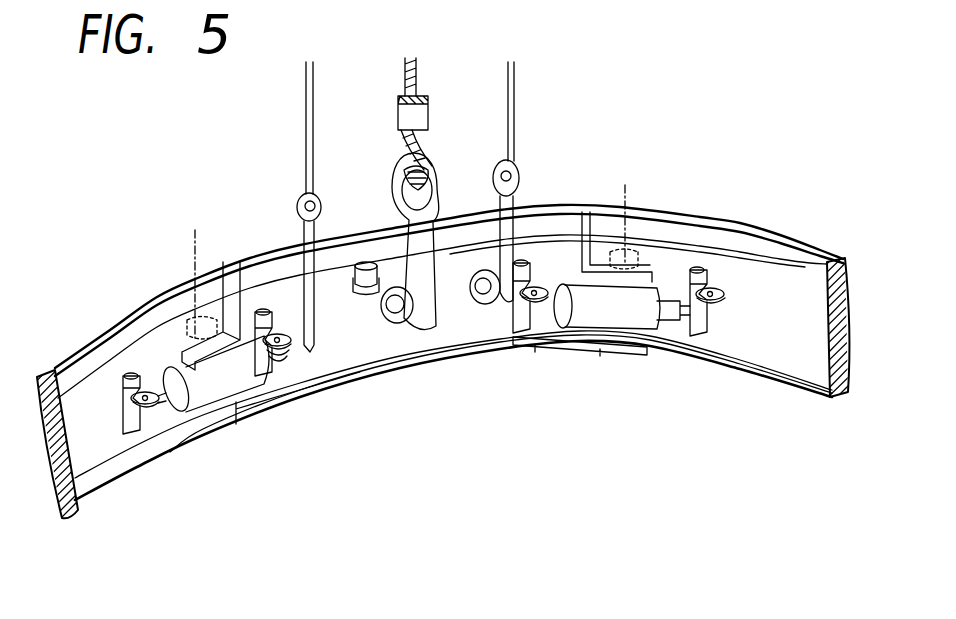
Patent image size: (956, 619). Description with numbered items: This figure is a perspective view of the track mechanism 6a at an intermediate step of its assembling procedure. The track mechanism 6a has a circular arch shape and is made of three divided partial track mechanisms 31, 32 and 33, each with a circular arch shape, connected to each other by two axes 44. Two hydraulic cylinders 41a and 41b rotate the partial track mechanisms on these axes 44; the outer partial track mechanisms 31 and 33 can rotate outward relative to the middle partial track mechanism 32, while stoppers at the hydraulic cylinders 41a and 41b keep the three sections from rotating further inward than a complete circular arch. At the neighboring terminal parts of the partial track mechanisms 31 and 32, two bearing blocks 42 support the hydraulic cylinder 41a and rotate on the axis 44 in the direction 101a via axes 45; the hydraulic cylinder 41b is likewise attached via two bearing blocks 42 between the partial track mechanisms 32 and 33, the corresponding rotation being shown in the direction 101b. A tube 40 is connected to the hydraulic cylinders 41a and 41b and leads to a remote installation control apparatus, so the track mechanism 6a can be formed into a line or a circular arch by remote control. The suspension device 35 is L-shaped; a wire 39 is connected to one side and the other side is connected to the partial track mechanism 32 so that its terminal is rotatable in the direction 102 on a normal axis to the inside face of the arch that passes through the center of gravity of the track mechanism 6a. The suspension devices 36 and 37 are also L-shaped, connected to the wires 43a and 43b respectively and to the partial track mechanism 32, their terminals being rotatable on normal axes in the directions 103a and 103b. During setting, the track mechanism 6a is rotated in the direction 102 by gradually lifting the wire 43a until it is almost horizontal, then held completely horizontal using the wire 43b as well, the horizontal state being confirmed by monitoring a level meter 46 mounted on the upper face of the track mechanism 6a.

The track mechanism 6a is at (318, 398).
The partial track mechanism 31 is at (155, 460).
The partial track mechanism 32 is at (420, 365).
The partial track mechanism 33 is at (716, 362).
The suspension device 35 is at (438, 172).
The suspension device 36 is at (295, 195).
The suspension device 37 is at (513, 165).
The wire 39 is at (418, 74).
The tube 40 is at (97, 480).
The hydraulic cylinder 41a is at (213, 397).
The hydraulic cylinder 41b is at (617, 325).
The bearing block 42 is at (123, 378).
The wire 43a is at (306, 127).
The wire 43b is at (510, 140).
The axis 44 is at (195, 300).
The axis 45 is at (130, 372).
The level meter 46 is at (373, 262).
The rotation direction 101a is at (203, 241).
The rotation direction 101b is at (612, 196).
The rotation direction 102 is at (420, 327).
The rotation direction 103a is at (313, 347).
The rotation direction 103b is at (553, 353).